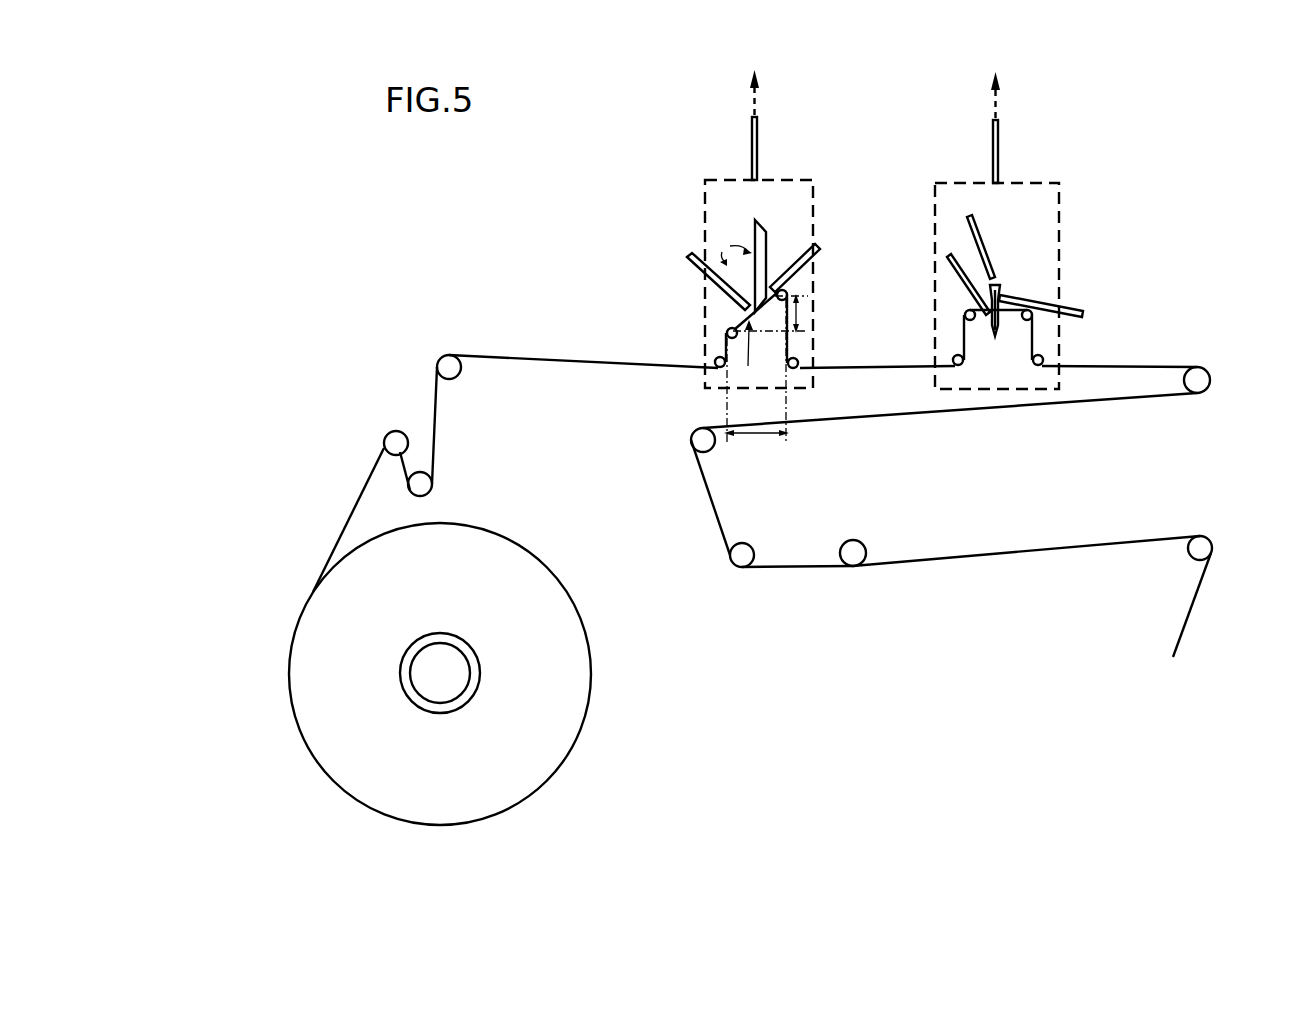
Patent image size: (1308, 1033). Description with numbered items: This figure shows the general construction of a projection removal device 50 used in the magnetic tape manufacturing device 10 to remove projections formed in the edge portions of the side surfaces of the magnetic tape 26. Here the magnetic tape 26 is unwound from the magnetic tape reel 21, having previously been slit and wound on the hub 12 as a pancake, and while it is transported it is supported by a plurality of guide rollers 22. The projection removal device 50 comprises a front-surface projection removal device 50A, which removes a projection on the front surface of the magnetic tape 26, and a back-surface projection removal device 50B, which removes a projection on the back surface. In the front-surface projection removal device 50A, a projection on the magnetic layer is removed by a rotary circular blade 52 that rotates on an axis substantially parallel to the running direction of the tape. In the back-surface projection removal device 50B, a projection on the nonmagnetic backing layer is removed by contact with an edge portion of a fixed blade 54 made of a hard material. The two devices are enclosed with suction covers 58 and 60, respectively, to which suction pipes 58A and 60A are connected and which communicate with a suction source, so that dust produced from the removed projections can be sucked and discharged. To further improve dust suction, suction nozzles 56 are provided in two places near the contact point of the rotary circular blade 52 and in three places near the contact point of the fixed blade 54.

The magnetic tape manufacturing device 10 is at (912, 684).
The hub 12 is at (478, 686).
The magnetic tape reel 21 is at (292, 733).
The guide rollers 22 is at (392, 436).
The magnetic tape 26 is at (545, 356).
The projection removal device 50 is at (962, 72).
The front-surface projection removal device 50A is at (818, 144).
The back-surface projection removal device 50B is at (943, 151).
The rotary circular blade 52 is at (752, 236).
The fixed blade 54 is at (1002, 290).
The suction nozzles 56 is at (690, 266).
The suction cover 58 is at (705, 227).
The suction pipe 58A is at (750, 131).
The suction cover 60 is at (1059, 226).
The suction pipe 60A is at (1000, 130).